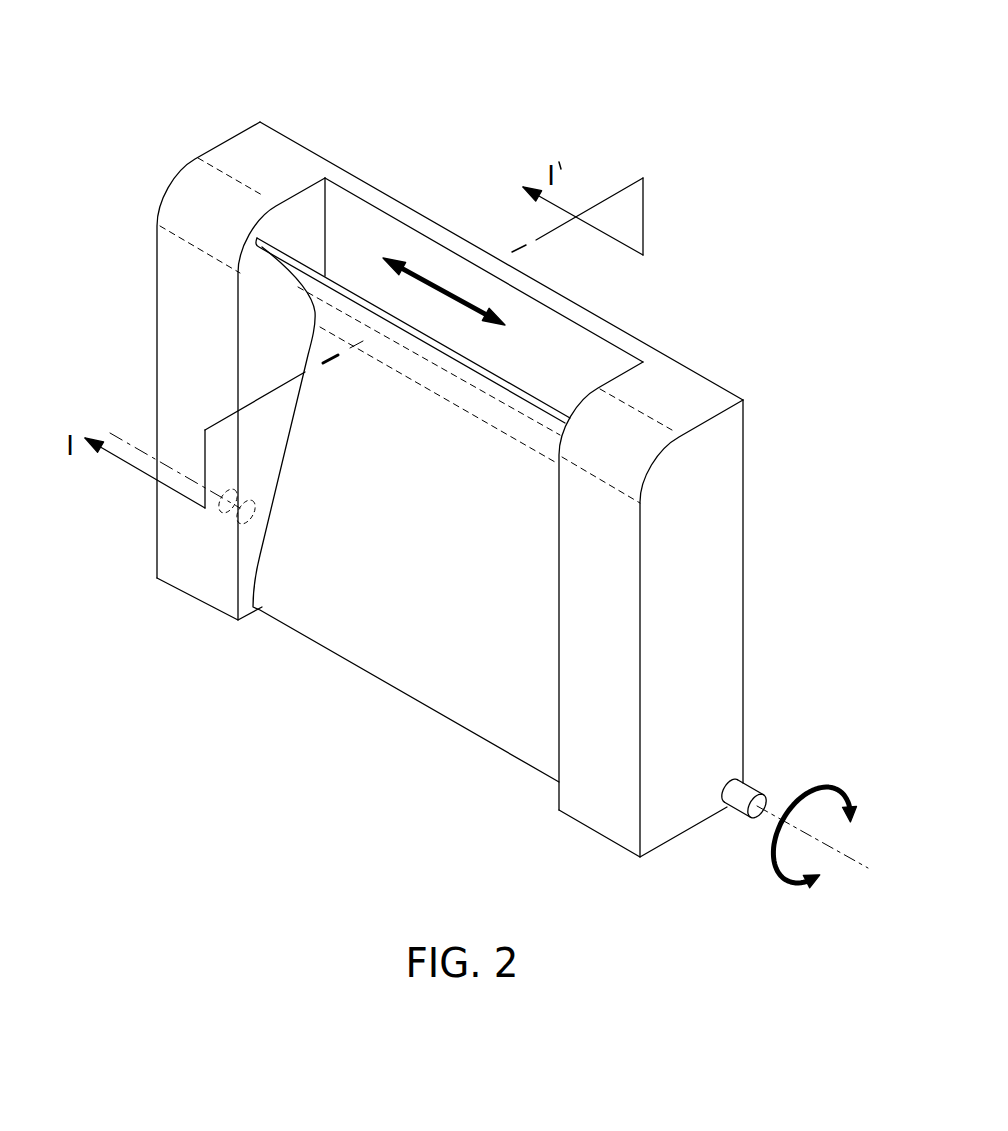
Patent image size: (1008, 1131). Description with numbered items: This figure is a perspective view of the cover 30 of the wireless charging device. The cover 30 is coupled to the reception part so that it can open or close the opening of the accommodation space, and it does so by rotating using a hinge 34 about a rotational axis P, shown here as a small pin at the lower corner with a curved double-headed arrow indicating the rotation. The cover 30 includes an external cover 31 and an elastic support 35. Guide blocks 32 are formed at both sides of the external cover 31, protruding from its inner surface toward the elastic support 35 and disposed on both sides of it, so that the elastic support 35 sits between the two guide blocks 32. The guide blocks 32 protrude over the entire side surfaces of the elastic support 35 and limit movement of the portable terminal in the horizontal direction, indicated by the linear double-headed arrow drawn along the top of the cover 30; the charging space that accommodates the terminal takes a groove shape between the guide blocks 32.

The cover 30 is at (450, 435).
The external cover 31 is at (618, 327).
The guide blocks 32 is at (258, 172).
The hinge 34 is at (741, 802).
The elastic support 35 is at (422, 666).
The rotational axis P is at (845, 853).